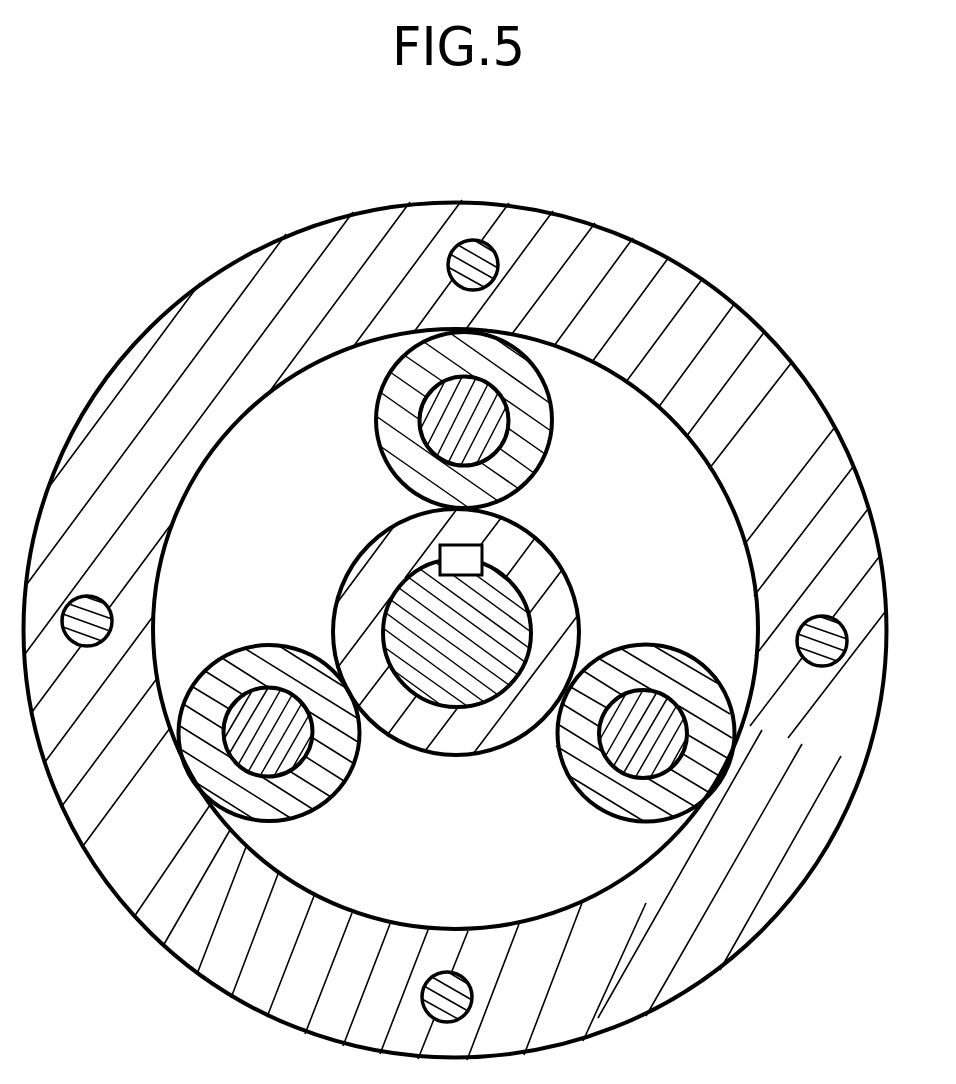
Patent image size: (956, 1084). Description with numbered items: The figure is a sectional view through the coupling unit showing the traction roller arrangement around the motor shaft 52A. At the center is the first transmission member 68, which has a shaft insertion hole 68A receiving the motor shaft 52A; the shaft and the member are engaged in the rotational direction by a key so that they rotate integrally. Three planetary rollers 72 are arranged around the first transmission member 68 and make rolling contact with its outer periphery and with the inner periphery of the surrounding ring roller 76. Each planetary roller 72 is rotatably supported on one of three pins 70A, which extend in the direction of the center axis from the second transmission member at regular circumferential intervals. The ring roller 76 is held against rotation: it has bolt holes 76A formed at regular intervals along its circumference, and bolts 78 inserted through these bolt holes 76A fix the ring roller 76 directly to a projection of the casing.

The motor shaft 52A is at (413, 597).
The first transmission member 68 is at (562, 603).
The shaft insertion hole 68A is at (520, 633).
The pins 70A is at (443, 427).
The planetary rollers 72 is at (538, 437).
The ring roller 76 is at (723, 288).
The bolt holes 76A is at (480, 238).
The bolts 78 is at (497, 257).